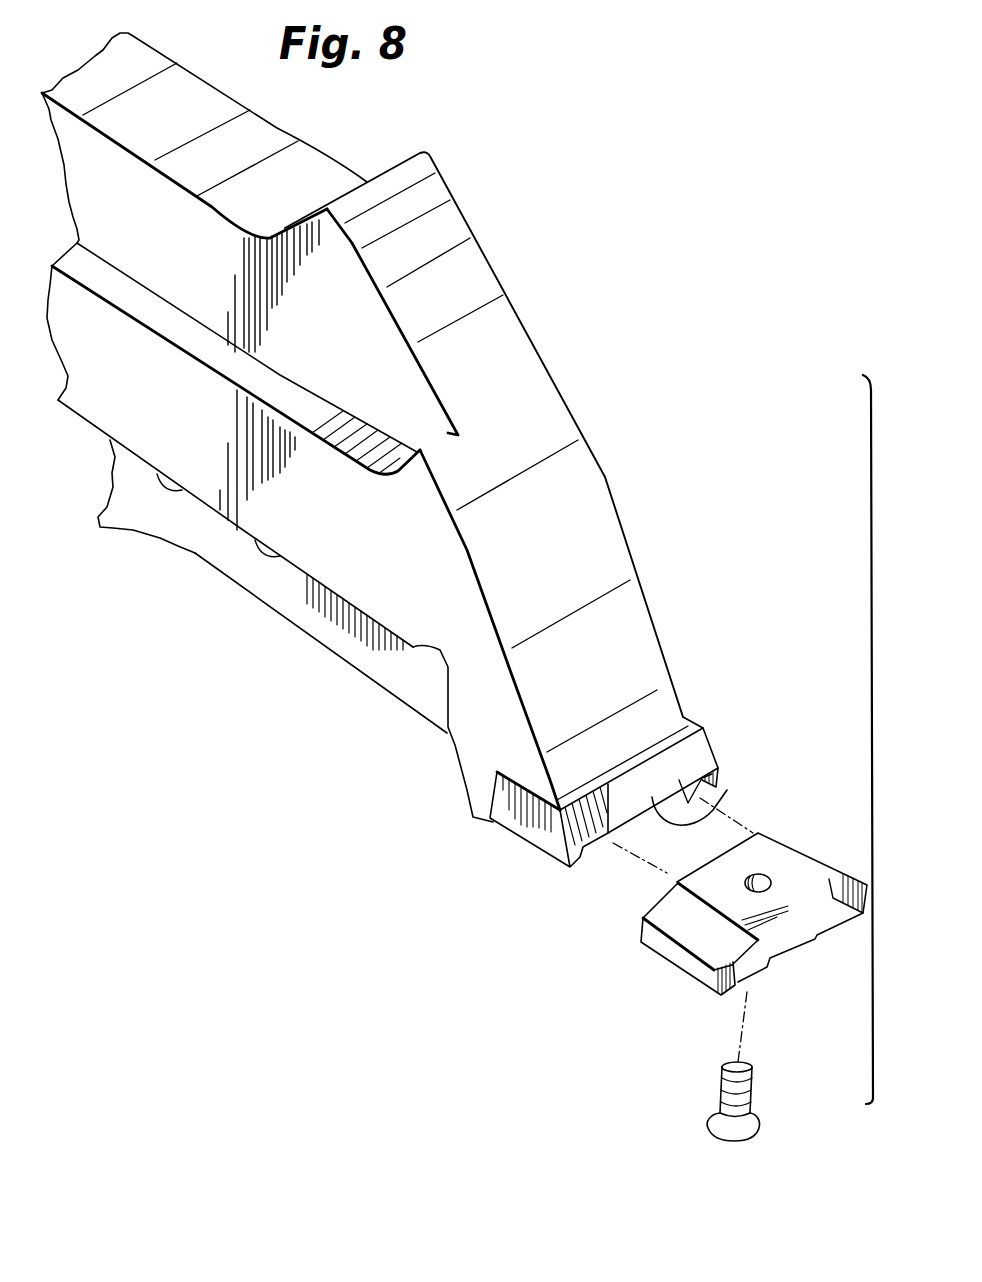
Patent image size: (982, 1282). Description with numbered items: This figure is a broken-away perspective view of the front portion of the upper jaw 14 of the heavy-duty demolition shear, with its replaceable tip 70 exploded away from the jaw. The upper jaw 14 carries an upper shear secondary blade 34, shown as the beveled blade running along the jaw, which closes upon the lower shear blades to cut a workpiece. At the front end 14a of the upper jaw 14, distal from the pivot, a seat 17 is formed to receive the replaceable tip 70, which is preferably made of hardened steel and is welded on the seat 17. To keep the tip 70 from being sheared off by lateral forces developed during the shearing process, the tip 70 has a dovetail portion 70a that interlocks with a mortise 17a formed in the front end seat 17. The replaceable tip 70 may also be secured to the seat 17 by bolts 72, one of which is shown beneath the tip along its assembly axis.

The upper jaw 14 is at (618, 535).
The front end 14a is at (678, 697).
The seat 17 is at (530, 837).
The mortise 17a is at (712, 810).
The upper shear secondary blade 34 is at (297, 613).
The replaceable tip 70 is at (790, 845).
The dovetail portion 70a is at (695, 875).
The bolts 72 is at (751, 1100).